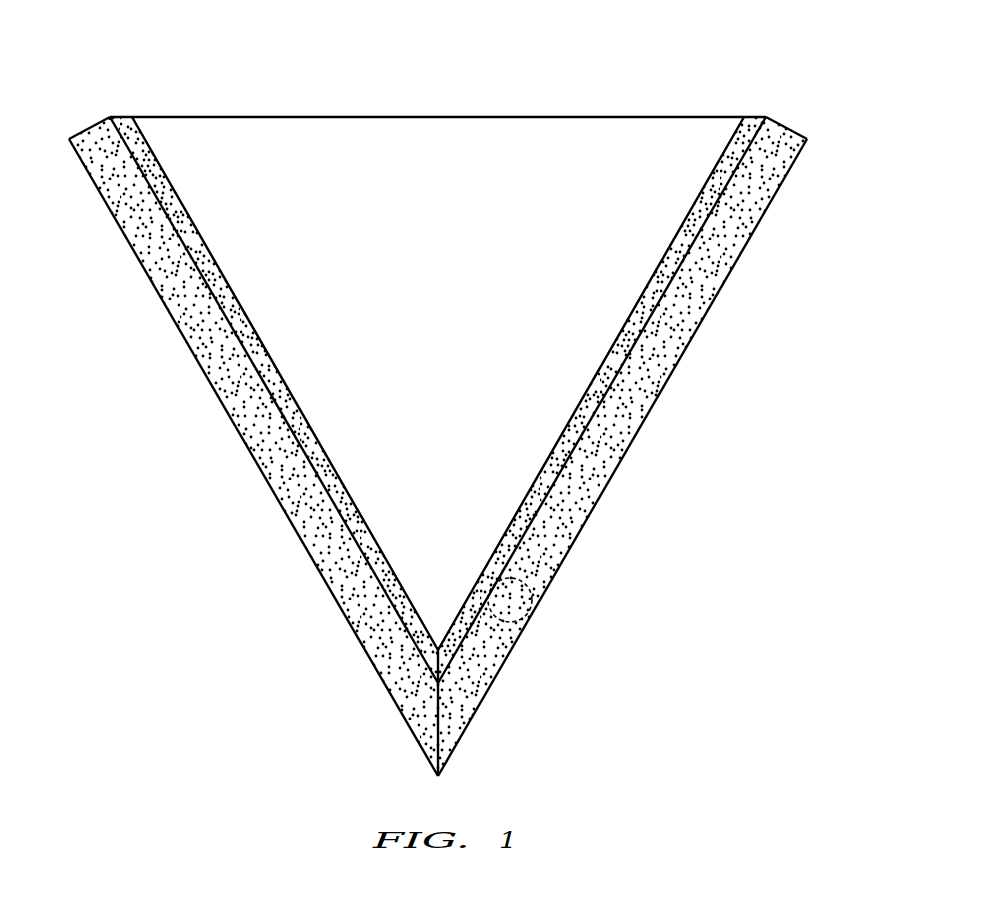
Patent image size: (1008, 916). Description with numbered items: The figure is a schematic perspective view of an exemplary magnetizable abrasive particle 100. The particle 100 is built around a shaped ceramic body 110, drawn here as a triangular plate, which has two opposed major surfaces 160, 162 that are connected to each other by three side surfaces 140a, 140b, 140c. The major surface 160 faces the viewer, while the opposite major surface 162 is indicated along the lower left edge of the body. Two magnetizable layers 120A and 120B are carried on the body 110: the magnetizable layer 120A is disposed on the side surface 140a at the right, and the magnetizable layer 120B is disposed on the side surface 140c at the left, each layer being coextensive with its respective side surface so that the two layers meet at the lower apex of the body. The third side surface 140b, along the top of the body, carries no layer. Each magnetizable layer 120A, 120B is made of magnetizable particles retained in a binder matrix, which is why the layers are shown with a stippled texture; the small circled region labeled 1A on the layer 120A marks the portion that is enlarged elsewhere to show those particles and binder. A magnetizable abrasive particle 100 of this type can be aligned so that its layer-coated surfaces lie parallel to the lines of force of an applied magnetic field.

The magnetizable abrasive particle 100 is at (690, 33).
The shaped ceramic body 110 is at (329, 112).
The magnetizable layer 120A is at (791, 125).
The magnetizable layer 120B is at (90, 123).
The side surface 140a is at (710, 182).
The side surface 140b is at (556, 116).
The side surface 140c is at (227, 283).
The major surface 160 is at (210, 140).
The major surface 162 is at (237, 428).
The detail view region 1A is at (530, 617).